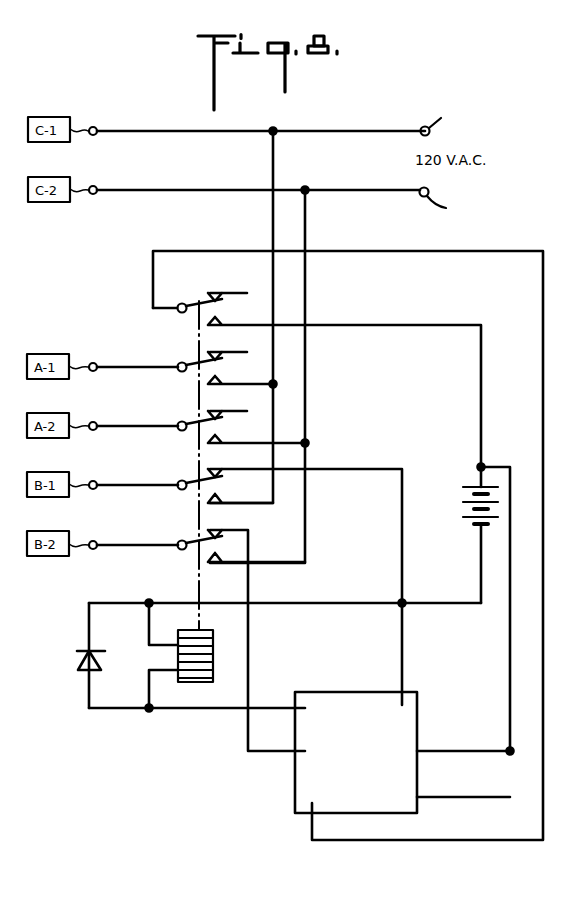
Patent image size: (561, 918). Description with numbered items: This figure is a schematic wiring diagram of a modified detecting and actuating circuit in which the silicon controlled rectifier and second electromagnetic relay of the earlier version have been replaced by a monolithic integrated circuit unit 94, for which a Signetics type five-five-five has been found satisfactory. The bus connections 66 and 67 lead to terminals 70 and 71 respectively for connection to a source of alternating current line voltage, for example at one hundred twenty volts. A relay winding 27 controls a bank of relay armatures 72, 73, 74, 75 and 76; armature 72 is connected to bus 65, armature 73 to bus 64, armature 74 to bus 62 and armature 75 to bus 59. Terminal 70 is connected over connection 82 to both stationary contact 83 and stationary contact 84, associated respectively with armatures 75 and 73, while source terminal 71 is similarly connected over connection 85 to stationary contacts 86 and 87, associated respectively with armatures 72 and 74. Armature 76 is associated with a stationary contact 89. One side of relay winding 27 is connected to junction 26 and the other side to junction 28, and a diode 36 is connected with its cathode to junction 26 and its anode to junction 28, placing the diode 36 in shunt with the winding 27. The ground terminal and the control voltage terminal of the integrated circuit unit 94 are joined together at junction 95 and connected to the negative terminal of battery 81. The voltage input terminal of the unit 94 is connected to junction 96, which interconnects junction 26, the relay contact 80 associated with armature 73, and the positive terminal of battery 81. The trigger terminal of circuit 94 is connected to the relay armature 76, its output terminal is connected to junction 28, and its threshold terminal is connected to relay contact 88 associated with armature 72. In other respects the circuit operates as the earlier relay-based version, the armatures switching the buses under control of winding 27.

The connection 66 is at (167, 130).
The connection 67 is at (170, 189).
The terminal 70 is at (437, 116).
The terminal 71 is at (446, 206).
The connection 82 is at (270, 220).
The connection 85 is at (307, 283).
The relay armature 76 is at (191, 303).
The stationary contact 89 is at (219, 321).
The bus 59 is at (130, 366).
The relay armature 75 is at (194, 362).
The stationary contact 83 is at (219, 380).
The bus 62 is at (131, 425).
The relay armature 74 is at (193, 422).
The stationary contact 87 is at (219, 436).
The bus 64 is at (131, 484).
The relay armature 73 is at (193, 481).
The stationary contact 80 is at (218, 468).
The stationary contact 84 is at (219, 496).
The bus 65 is at (131, 544).
The relay armature 72 is at (193, 541).
The stationary contact 88 is at (216, 530).
The stationary contact 86 is at (215, 564).
The junction 26 is at (150, 602).
The relay winding 27 is at (215, 641).
The diode 36 is at (77, 663).
The junction 28 is at (147, 712).
The battery 81 is at (466, 499).
The junction 96 is at (406, 600).
The monolithic integrated circuit unit 94 is at (421, 712).
The junction 95 is at (508, 750).